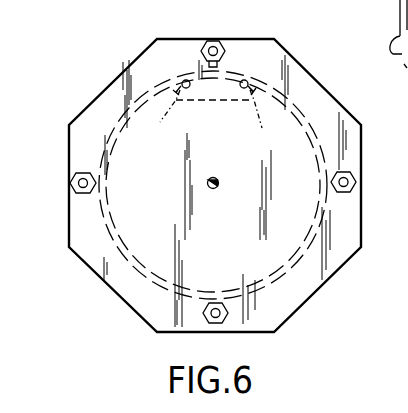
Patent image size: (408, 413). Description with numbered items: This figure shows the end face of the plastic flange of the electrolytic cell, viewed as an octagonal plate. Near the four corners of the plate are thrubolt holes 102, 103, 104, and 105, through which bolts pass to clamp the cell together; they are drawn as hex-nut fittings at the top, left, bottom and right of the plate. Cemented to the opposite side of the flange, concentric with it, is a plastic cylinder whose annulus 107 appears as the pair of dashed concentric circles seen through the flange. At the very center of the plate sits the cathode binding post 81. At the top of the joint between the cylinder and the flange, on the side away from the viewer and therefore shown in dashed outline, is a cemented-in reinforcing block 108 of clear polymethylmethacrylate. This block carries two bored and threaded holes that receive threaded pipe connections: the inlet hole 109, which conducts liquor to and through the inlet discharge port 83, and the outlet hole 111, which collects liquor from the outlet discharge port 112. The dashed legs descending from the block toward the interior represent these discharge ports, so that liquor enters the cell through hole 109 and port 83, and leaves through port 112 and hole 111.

The cathode binding post 81 is at (219, 182).
The inlet discharge port 83 is at (268, 123).
The thrubolt hole 102 is at (222, 27).
The thrubolt hole 103 is at (74, 183).
The thrubolt hole 104 is at (224, 318).
The thrubolt hole 105 is at (357, 182).
The annulus of plastic cylinder 107 is at (117, 100).
The reinforcing block 108 is at (190, 106).
The inlet hole 109 is at (246, 82).
The outlet hole 111 is at (184, 81).
The outlet discharge port 112 is at (157, 121).